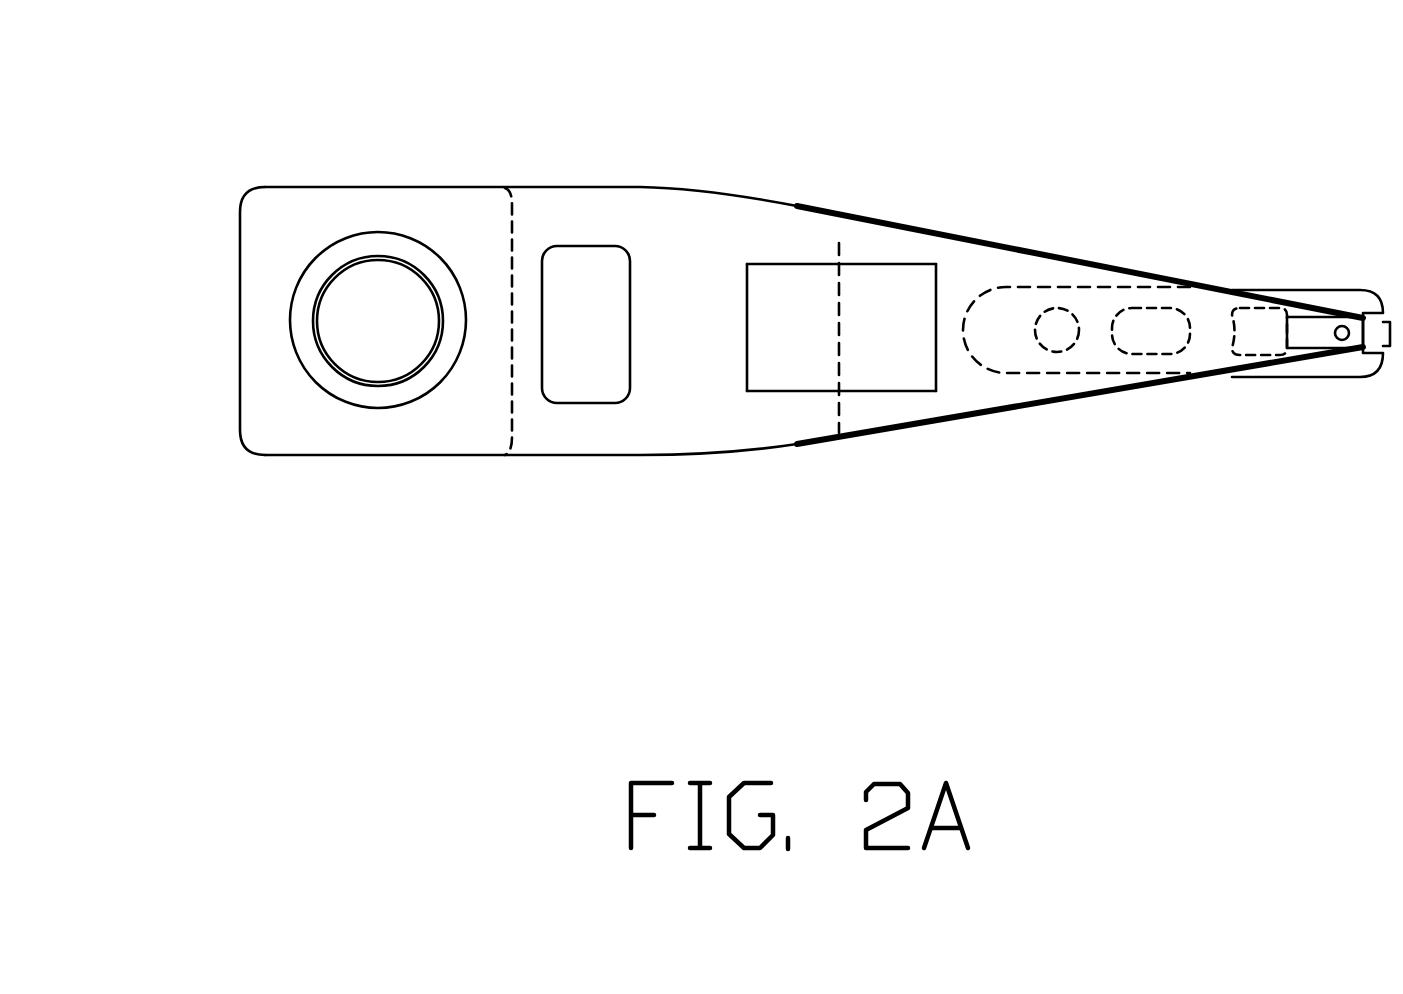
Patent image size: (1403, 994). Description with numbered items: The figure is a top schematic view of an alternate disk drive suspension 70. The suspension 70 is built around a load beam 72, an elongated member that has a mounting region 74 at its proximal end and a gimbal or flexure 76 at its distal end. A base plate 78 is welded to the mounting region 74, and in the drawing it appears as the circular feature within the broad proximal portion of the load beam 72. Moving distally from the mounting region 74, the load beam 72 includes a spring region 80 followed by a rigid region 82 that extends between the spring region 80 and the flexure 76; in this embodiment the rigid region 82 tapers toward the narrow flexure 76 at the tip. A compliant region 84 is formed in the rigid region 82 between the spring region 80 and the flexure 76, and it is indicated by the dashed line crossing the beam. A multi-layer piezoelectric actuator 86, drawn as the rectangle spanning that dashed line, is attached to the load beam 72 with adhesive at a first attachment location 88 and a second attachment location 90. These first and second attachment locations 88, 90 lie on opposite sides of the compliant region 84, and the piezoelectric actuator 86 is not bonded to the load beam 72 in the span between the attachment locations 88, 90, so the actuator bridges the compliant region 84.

The disk drive suspension 70 is at (183, 440).
The load beam 72 is at (1020, 424).
The mounting region 74 is at (280, 225).
The flexure 76 is at (1300, 290).
The base plate 78 is at (363, 409).
The spring region 80 is at (552, 188).
The rigid region 82 is at (993, 243).
The compliant region 84 is at (842, 245).
The multi-layer piezoelectric actuator 86 is at (850, 372).
The first attachment location 88 is at (767, 348).
The second attachment location 90 is at (905, 353).